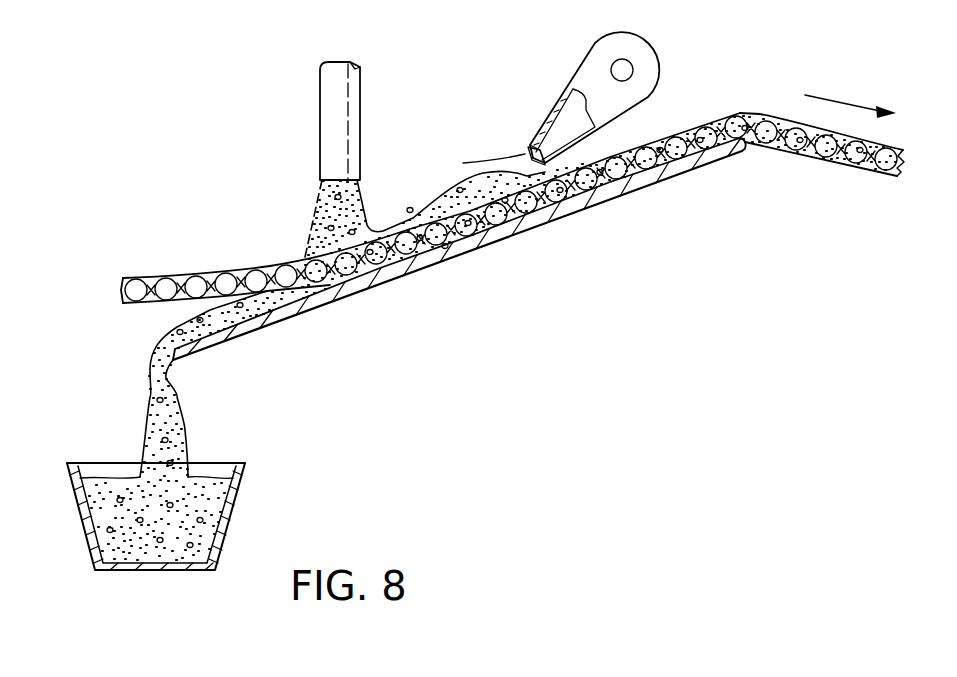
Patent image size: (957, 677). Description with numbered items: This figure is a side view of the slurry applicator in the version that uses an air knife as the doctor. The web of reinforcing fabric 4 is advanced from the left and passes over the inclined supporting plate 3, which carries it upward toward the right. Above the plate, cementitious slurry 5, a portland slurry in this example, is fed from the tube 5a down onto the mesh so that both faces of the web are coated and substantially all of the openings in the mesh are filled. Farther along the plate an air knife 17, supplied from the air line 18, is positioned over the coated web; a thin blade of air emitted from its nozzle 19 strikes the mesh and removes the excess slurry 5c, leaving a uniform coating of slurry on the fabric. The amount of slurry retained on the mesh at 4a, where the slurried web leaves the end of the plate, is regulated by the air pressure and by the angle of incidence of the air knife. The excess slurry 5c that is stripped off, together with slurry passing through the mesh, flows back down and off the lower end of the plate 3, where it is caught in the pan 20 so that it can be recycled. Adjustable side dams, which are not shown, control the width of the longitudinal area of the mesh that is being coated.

The supporting plate 3 is at (380, 278).
The web of reinforcing fabric 4 is at (124, 277).
The slurried web 4a is at (712, 115).
The cementitious slurry 5 is at (322, 205).
The tube 5a is at (320, 109).
The excess slurry 5c is at (443, 187).
The air knife 17 is at (577, 72).
The air line 18 is at (622, 70).
The nozzle 19 is at (528, 178).
The pan 20 is at (92, 563).